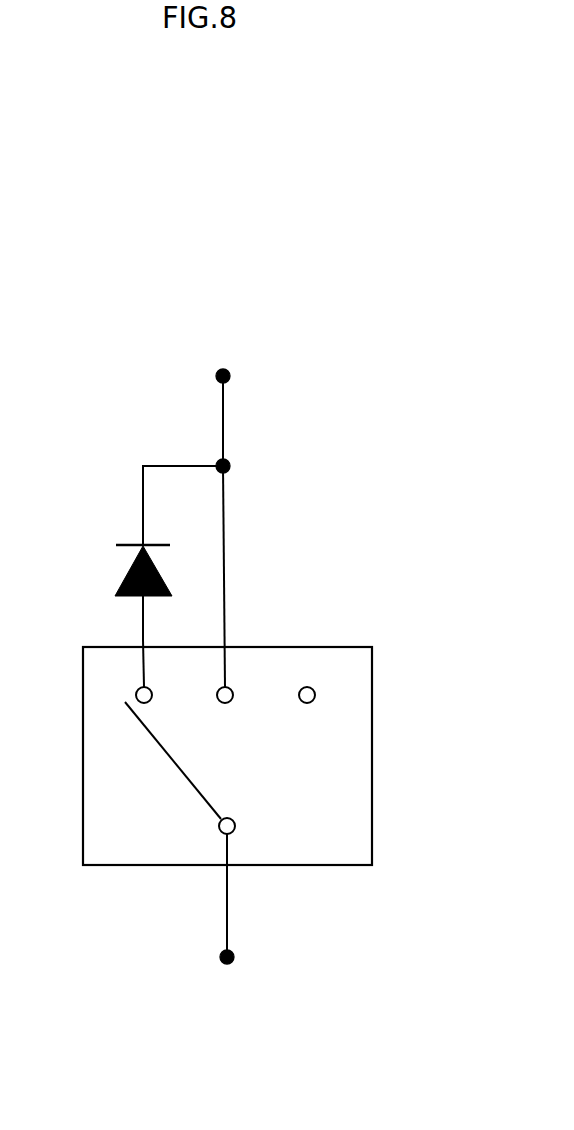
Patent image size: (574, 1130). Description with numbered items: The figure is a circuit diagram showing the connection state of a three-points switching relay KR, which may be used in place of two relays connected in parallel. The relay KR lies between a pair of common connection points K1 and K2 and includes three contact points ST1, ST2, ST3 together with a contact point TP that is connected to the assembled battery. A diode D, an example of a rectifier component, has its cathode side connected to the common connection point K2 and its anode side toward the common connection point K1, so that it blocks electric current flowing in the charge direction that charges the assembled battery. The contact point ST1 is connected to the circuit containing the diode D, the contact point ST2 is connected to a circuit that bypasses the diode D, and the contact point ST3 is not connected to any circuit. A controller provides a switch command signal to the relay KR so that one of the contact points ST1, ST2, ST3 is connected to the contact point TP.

The common connection point K2 is at (230, 374).
The common connection point K1 is at (233, 955).
The diode D is at (127, 577).
The three-points switching relay KR is at (207, 756).
The contact point ST1 is at (136, 694).
The contact point ST2 is at (217, 696).
The contact point ST3 is at (299, 696).
The contact point TP is at (198, 771).